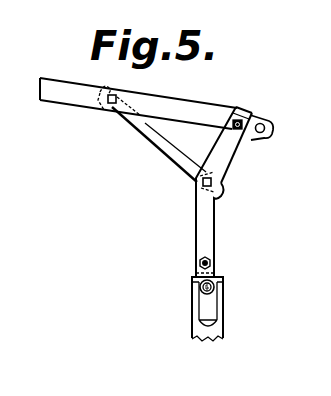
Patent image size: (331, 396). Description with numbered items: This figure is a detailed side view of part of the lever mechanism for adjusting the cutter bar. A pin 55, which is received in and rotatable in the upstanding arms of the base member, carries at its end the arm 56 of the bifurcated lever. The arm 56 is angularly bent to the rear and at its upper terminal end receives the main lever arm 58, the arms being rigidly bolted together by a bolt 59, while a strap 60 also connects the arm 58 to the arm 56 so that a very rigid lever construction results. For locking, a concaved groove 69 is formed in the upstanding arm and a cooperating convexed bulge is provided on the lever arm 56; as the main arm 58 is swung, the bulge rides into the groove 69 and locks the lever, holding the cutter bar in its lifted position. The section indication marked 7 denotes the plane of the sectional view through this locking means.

The pin 55 is at (215, 281).
The arm 56 is at (195, 212).
The arm 58 is at (83, 101).
The bolt 59 is at (247, 133).
The strap 60 is at (149, 133).
The concaved groove 69 is at (201, 328).
The section line 7- 7 is at (155, 275).